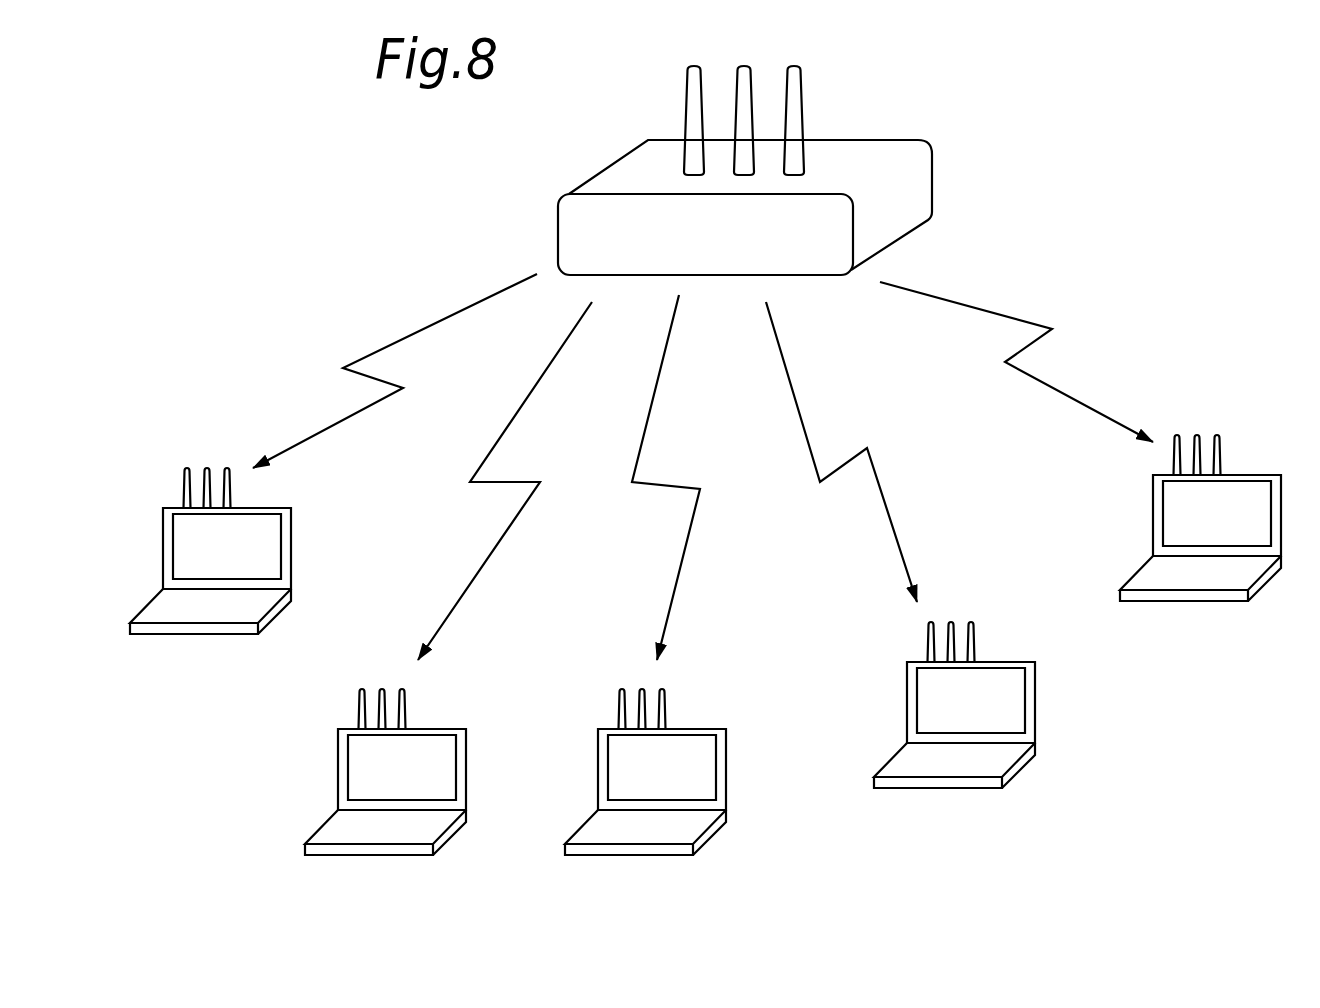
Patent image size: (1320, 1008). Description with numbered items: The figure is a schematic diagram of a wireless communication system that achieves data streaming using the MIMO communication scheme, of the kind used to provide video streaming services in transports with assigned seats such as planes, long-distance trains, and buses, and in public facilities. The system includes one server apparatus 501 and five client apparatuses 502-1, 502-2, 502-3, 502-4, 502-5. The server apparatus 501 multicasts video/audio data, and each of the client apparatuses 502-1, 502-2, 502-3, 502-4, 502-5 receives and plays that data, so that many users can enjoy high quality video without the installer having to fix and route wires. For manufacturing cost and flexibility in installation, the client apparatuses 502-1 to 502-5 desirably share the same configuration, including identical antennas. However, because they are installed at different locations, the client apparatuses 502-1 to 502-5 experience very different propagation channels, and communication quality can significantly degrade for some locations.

The server apparatus 501 is at (918, 193).
The client apparatus 502-1 is at (192, 633).
The client apparatus 502-2 is at (450, 837).
The client apparatus 502-3 is at (712, 828).
The client apparatus 502-4 is at (1023, 763).
The client apparatus 502-5 is at (1263, 473).